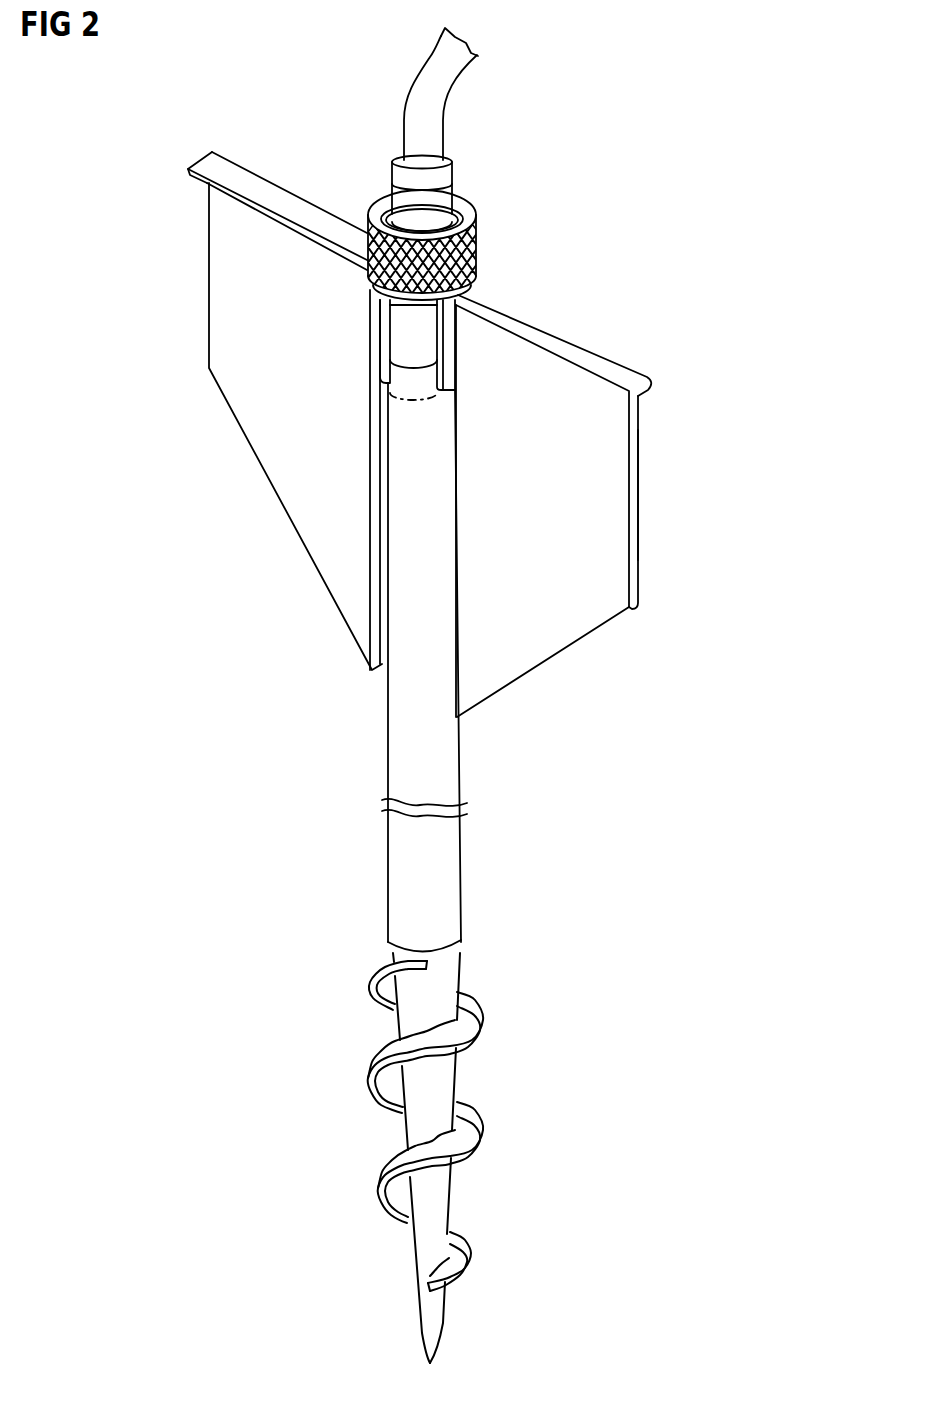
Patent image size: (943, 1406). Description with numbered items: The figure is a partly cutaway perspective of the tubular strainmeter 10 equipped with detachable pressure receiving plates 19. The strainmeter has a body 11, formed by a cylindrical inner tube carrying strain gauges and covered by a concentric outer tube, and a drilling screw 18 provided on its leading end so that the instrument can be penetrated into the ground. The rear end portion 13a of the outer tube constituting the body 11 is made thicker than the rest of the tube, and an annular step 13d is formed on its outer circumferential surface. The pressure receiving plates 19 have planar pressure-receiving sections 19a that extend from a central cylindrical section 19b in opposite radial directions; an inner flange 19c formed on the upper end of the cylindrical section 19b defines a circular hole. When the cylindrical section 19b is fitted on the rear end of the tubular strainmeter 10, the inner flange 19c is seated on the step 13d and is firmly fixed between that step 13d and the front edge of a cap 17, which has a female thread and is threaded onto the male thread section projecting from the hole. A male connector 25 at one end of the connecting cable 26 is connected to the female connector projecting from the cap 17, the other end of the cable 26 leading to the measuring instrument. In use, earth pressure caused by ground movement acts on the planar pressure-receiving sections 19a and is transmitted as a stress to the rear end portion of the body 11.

The tubular strainmeter 10 is at (379, 704).
The body 11 is at (394, 777).
The rear end portion of the outer tube 13a is at (403, 342).
The annular step 13d is at (380, 322).
The cap 17 is at (474, 223).
The drilling screw 18 is at (450, 1193).
The pressure receiving plates 19 is at (645, 485).
The planar pressure-receiving sections 19a is at (218, 265).
The cylindrical section 19b is at (455, 337).
The inner flange 19c is at (474, 292).
The male connector 25 is at (392, 182).
The connecting cable 26 is at (418, 90).